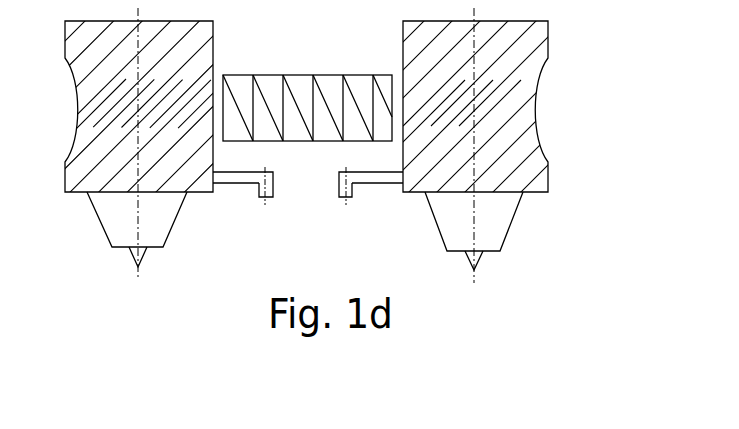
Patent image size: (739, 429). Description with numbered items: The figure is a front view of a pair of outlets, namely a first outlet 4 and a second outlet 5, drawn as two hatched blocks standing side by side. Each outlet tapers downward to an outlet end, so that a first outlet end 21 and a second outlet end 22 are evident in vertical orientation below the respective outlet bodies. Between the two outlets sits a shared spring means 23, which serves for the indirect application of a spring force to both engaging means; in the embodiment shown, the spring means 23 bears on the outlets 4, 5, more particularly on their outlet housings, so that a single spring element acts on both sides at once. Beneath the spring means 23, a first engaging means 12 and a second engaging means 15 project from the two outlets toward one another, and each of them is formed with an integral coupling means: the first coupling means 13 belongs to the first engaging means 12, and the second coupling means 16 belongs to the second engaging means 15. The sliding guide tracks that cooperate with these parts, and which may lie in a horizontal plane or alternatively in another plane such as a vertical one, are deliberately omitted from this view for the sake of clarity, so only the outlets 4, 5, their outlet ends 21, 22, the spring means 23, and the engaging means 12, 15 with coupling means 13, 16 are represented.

The first outlet 4 is at (518, 107).
The second outlet 5 is at (83, 187).
The first engaging means 12 is at (347, 198).
The first coupling means 13 is at (382, 185).
The second engaging means 15 is at (267, 197).
The second coupling means 16 is at (227, 183).
The first outlet end 21 is at (480, 258).
The second outlet end 22 is at (145, 253).
The spring means 23 is at (328, 82).